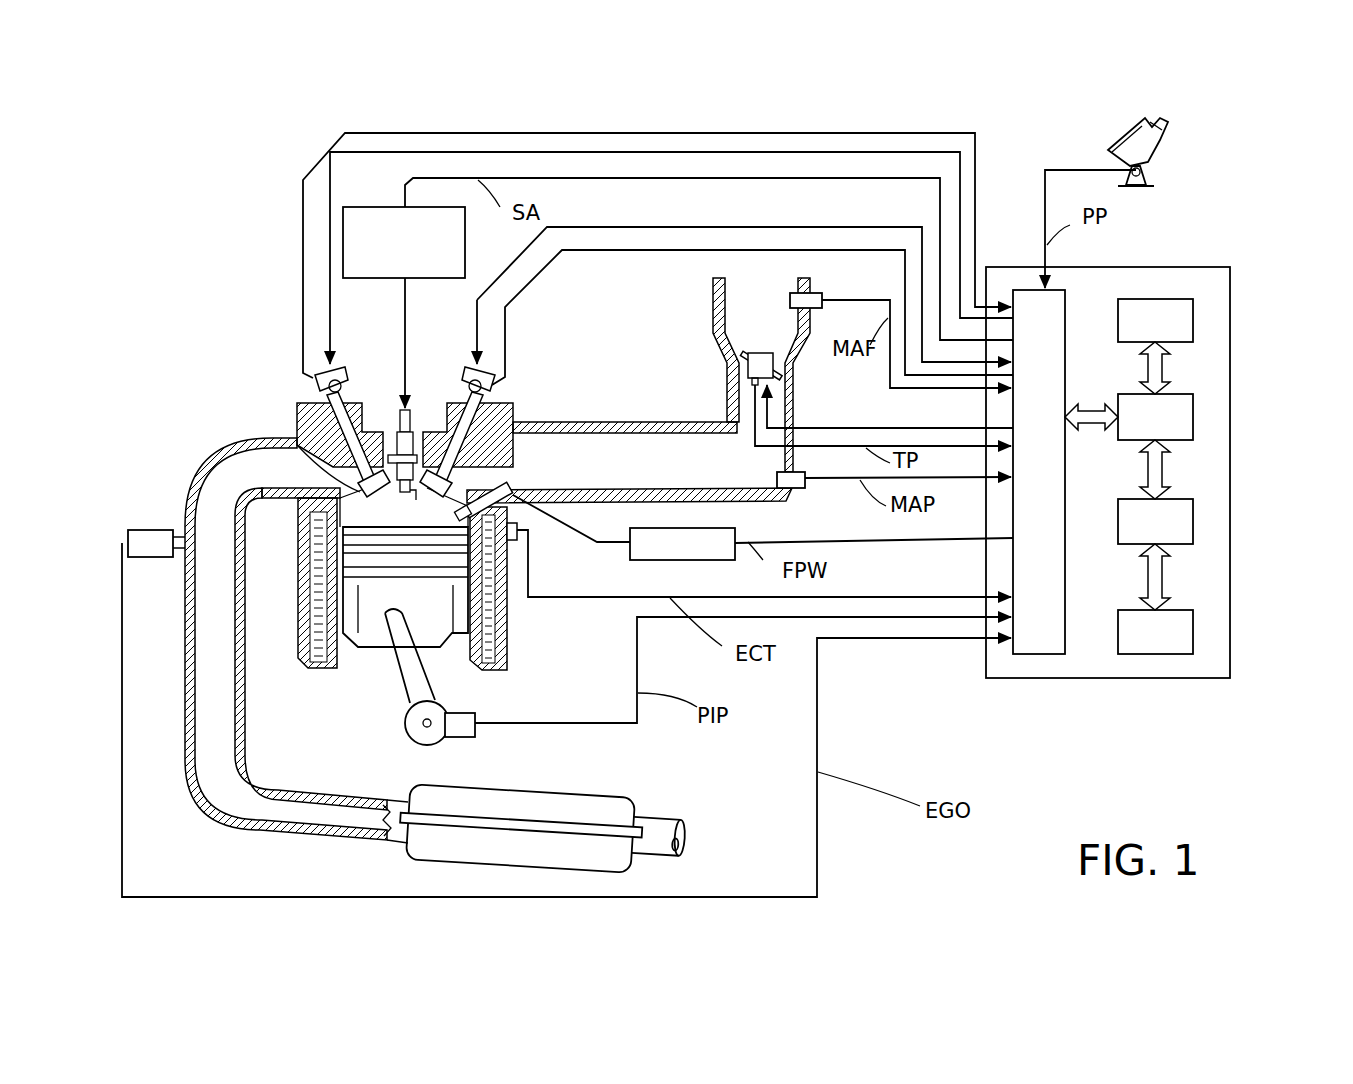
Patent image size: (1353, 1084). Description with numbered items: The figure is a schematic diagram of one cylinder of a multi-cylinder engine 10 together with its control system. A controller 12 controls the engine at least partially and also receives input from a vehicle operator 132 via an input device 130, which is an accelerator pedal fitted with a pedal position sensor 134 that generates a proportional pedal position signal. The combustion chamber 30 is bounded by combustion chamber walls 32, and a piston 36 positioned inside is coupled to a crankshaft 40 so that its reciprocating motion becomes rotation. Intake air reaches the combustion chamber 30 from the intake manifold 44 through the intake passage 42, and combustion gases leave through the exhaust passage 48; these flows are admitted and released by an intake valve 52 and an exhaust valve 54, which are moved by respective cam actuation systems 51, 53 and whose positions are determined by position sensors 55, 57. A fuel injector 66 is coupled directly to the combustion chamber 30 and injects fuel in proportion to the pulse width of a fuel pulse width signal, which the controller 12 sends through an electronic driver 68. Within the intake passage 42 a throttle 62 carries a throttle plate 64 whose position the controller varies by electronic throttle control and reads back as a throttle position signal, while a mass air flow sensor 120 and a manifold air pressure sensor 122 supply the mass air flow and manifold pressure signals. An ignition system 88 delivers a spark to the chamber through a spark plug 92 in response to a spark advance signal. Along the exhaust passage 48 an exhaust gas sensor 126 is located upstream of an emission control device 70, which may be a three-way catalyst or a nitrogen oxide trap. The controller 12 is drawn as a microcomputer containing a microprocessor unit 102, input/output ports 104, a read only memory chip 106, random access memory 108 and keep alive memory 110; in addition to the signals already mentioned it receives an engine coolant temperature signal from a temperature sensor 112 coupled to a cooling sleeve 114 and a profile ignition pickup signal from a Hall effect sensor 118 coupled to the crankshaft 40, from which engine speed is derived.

The engine 10 is at (226, 355).
The controller 12 is at (1215, 267).
The combustion chamber 30 is at (403, 510).
The combustion chamber walls 32 is at (343, 655).
The piston 36 is at (385, 615).
The crankshaft 40 is at (413, 742).
The intake passage 42 is at (773, 330).
The intake manifold 44 is at (704, 475).
The exhaust passage 48 is at (277, 482).
The cam actuation system 51 is at (470, 372).
The intake valve 52 is at (452, 472).
The cam actuation system 53 is at (320, 372).
The exhaust valve 54 is at (300, 450).
The position sensor 55 is at (492, 392).
The position sensor 57 is at (313, 380).
The throttle 62 is at (778, 360).
The throttle plate 64 is at (745, 363).
The fuel injector 66 is at (545, 520).
The electronic driver 68 is at (648, 562).
The emission control device 70 is at (590, 797).
The ignition system 88 is at (350, 207).
The spark plug 92 is at (407, 408).
The microprocessor unit 102 is at (1193, 412).
The input/output ports 104 is at (1068, 302).
The read only memory chip 106 is at (1193, 312).
The random access memory 108 is at (1193, 520).
The keep alive memory 110 is at (1193, 630).
The temperature sensor 112 is at (518, 535).
The cooling sleeve 114 is at (495, 618).
The Hall effect sensor 118 is at (466, 740).
The mass air flow sensor 120 is at (812, 293).
The manifold air pressure sensor 122 is at (800, 490).
The exhaust gas sensor 126 is at (128, 532).
The input device 130 is at (1112, 143).
The vehicle operator 132 is at (1168, 128).
The pedal position sensor 134 is at (1148, 176).